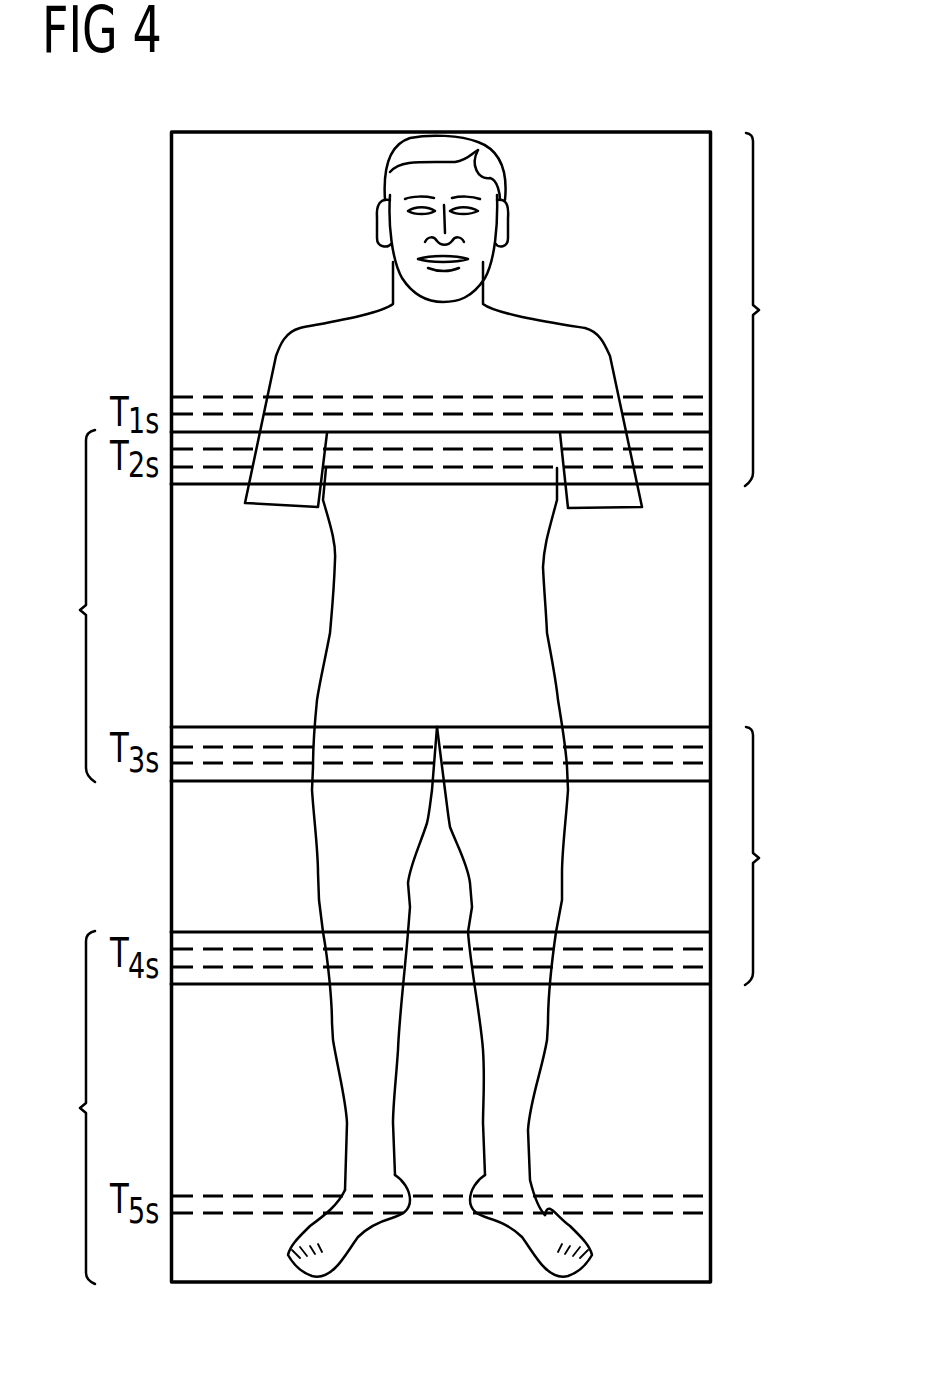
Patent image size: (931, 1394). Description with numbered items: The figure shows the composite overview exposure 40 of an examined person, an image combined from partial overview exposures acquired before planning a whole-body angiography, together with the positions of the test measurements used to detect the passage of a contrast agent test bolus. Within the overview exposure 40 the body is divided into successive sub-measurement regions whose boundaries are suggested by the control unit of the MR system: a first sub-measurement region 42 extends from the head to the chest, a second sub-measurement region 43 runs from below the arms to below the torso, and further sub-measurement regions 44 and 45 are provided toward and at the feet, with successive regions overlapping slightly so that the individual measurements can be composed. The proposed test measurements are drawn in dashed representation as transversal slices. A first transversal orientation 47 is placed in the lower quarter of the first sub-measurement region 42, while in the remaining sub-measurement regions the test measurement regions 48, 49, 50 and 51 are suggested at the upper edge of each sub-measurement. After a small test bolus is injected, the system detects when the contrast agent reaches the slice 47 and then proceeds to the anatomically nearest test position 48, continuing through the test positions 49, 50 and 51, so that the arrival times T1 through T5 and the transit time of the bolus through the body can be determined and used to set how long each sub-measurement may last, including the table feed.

The composite overview exposure 40 is at (610, 147).
The first sub-measurement region 42 is at (777, 309).
The second sub-measurement region 43 is at (67, 606).
The sub-measurement region 44 is at (777, 856).
The sub-measurement region 45 is at (66, 1107).
The first transversal orientation 47 is at (169, 400).
The test measurement region 48 is at (698, 461).
The test measurement region 49 is at (710, 750).
The test measurement region 50 is at (710, 962).
The test measurement region 51 is at (712, 1205).